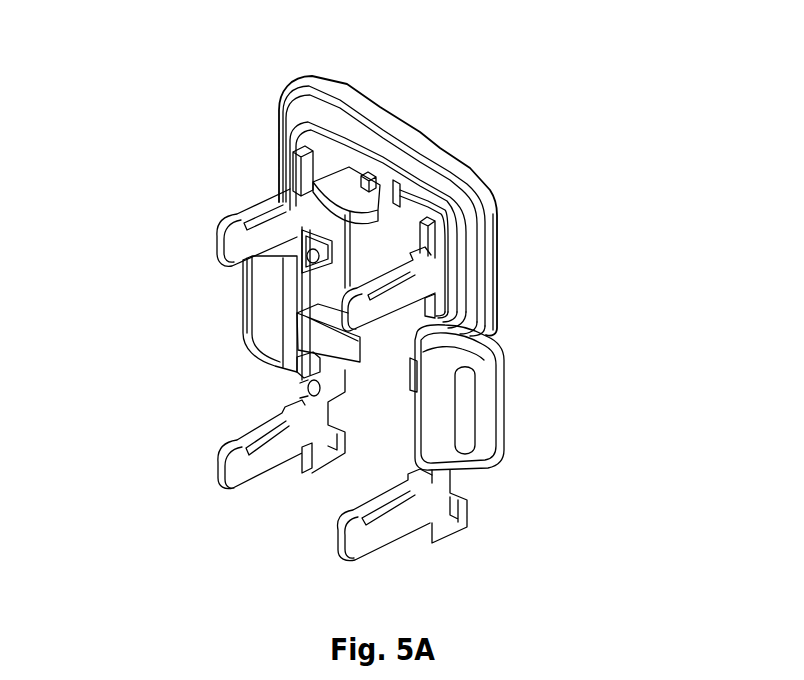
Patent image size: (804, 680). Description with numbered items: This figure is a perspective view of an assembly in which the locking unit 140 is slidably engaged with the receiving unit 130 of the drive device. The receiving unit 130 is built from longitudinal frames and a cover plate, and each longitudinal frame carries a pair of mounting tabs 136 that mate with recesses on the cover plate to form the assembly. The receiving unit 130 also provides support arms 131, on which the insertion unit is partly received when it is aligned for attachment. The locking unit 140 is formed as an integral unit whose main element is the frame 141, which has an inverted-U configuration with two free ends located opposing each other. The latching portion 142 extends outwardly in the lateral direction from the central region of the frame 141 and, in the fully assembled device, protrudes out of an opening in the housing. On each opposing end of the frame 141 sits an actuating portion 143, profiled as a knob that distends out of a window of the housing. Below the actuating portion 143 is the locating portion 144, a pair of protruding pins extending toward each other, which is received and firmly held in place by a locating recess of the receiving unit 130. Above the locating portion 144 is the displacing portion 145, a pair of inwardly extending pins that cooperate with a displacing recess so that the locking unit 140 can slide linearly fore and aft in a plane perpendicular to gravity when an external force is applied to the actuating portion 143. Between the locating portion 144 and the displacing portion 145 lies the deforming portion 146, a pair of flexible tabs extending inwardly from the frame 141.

The receiving unit 130 is at (239, 203).
The support arms 131 is at (223, 230).
The mounting tabs 136 is at (339, 448).
The locking unit 140 is at (413, 100).
The frame 141 is at (465, 170).
The latching portion 142 is at (343, 188).
The actuating portion 143 is at (238, 274).
The locating portion 144 is at (298, 387).
The displacing portion 145 is at (318, 248).
The deforming portion 146 is at (330, 337).